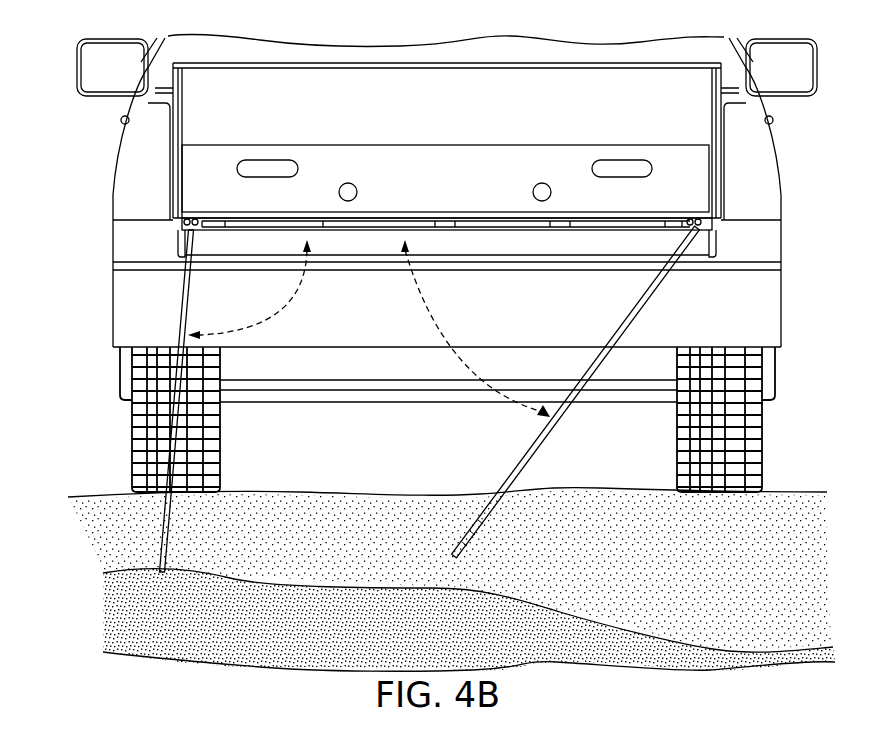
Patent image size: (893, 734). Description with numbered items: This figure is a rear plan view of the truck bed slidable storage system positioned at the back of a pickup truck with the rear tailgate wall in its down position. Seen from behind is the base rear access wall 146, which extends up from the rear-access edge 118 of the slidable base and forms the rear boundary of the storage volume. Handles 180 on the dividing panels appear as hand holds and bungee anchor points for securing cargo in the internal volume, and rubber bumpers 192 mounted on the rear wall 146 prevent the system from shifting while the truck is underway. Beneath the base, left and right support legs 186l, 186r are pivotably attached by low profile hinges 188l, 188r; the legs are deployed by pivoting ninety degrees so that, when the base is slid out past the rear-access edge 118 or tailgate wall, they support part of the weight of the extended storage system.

The rear-access edge 118 is at (593, 210).
The handles 180 is at (260, 160).
The rubber bumpers 192 is at (533, 190).
The base rear access wall 146 is at (465, 205).
The left low profile hinge 188l is at (175, 223).
The right low profile hinge 188r is at (714, 230).
The left support leg 186l is at (172, 308).
The right support leg 186r is at (546, 437).